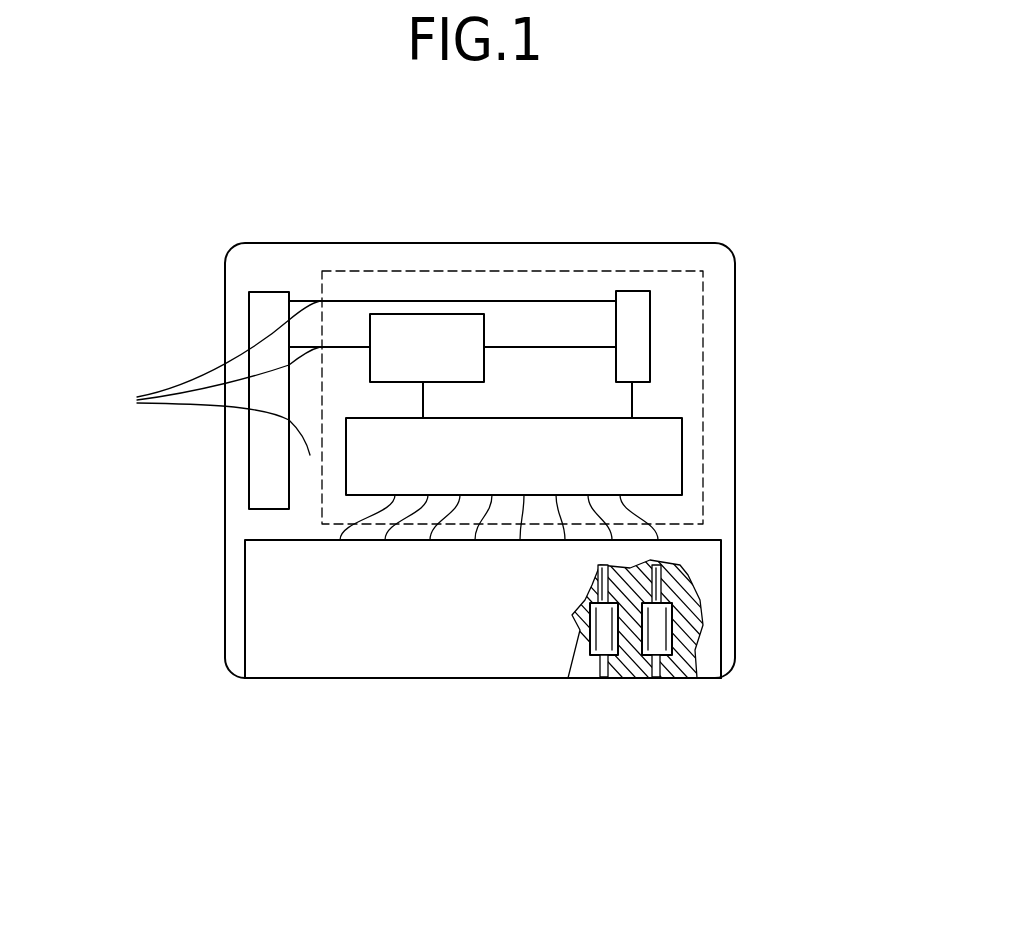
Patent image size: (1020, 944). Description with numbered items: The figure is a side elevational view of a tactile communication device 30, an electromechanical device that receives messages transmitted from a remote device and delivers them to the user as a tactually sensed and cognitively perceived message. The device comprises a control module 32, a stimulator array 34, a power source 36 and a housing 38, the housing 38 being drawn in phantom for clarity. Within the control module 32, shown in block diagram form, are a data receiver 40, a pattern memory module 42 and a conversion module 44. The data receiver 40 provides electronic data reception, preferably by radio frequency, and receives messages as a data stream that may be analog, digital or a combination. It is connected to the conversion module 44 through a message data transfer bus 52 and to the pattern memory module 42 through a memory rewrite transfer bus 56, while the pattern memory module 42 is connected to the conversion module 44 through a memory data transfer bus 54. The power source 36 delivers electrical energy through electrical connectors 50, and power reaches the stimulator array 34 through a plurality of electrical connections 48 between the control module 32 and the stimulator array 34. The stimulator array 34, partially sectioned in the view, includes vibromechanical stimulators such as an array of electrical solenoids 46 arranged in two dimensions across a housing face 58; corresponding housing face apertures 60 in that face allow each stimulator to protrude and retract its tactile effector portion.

The tactile communication device 30 is at (185, 240).
The control module 32 is at (315, 282).
The stimulator array 34 is at (712, 530).
The power source 36 is at (249, 443).
The housing 38 is at (750, 295).
The data receiver 40 is at (484, 365).
The pattern memory module 42 is at (650, 356).
The conversion module 44 is at (495, 418).
The electrical solenoids 46 is at (634, 640).
The electrical connections 48 is at (327, 533).
The electrical connectors 50 is at (200, 378).
The message data transfer bus 52 is at (423, 400).
The memory data transfer bus 54 is at (632, 392).
The memory rewrite transfer bus 56 is at (510, 347).
The housing face 58 is at (282, 678).
The housing face apertures 60 is at (596, 686).